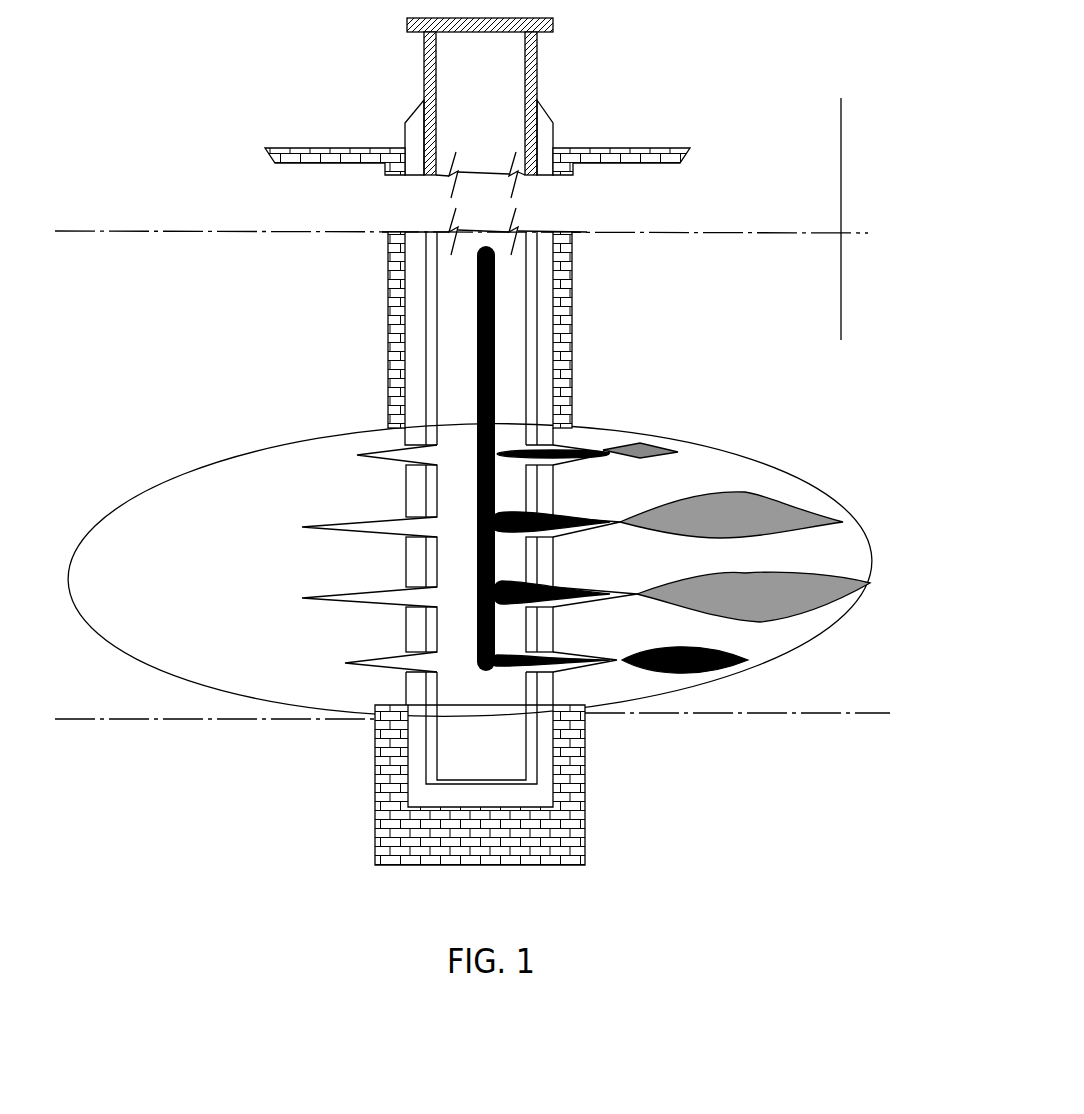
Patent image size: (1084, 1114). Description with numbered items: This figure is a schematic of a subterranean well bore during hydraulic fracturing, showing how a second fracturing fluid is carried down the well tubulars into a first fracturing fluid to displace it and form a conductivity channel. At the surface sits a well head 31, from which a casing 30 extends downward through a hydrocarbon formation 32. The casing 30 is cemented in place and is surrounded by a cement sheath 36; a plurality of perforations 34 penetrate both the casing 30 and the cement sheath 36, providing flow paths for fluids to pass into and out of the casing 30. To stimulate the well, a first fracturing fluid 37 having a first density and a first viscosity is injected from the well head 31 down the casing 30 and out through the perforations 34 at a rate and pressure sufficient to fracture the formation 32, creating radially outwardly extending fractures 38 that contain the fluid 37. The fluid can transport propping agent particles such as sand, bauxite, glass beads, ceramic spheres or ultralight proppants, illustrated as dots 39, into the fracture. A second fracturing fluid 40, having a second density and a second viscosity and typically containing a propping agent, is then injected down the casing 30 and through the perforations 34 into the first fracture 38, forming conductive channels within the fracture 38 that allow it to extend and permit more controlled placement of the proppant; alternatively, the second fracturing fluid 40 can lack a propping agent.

The casing 30 is at (530, 357).
The well head 31 is at (537, 75).
The hydrocarbon formation 32 is at (841, 203).
The perforations 34 is at (302, 598).
The cement sheath 36 is at (415, 335).
The first fracturing fluid 37 is at (508, 412).
The fracture 38 is at (757, 640).
The propping agent particles 39 is at (458, 698).
The second fracturing fluid 40 is at (523, 603).